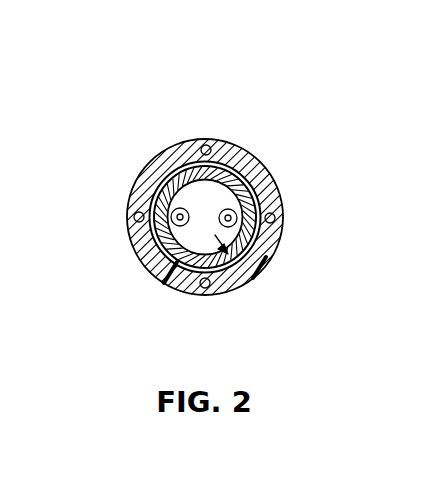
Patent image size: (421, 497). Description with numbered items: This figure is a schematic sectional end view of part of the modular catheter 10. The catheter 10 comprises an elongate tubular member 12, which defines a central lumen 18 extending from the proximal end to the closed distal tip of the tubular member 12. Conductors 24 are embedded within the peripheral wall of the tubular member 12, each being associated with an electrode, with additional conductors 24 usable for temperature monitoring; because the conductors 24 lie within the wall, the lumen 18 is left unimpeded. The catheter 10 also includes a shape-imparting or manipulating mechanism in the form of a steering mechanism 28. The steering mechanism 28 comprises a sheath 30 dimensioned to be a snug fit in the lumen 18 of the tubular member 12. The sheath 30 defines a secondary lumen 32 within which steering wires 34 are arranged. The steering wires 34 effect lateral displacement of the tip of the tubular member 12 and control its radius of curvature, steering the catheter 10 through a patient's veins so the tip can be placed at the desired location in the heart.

The modular catheter 10 is at (145, 123).
The elongate tubular member 12 is at (280, 182).
The central lumen 18 is at (244, 174).
The conductors 24 is at (208, 146).
The steering mechanism 28 is at (170, 275).
The sheath 30 is at (158, 195).
The secondary lumen 32 is at (255, 276).
The steering wires 34 is at (234, 225).